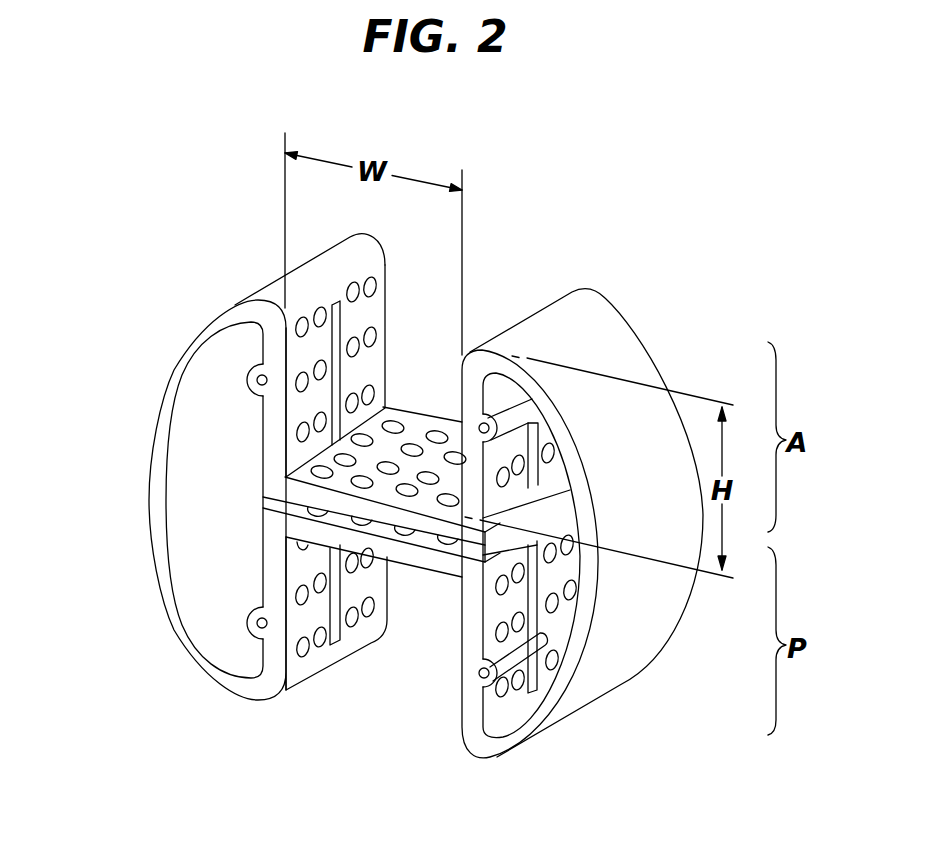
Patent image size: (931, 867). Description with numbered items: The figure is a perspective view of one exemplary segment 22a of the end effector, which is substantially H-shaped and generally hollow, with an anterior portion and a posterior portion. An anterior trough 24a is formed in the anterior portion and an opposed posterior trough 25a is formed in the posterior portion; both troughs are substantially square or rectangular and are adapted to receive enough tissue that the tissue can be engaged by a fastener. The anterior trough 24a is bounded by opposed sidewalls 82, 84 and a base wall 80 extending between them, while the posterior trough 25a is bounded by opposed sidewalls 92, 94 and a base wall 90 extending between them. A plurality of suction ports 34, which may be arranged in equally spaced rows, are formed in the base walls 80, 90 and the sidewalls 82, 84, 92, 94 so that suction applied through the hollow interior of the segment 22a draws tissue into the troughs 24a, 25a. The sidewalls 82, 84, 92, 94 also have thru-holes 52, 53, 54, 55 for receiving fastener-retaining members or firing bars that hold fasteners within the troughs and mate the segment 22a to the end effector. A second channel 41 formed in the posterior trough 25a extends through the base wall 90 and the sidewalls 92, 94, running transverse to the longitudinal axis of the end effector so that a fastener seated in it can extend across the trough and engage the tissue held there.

The segment 22a is at (170, 256).
The anterior trough 24a is at (506, 282).
The posterior trough 25a is at (368, 692).
The sidewall 82 is at (357, 268).
The sidewall 92 is at (292, 670).
The sidewall 84 is at (541, 306).
The sidewall 94 is at (457, 668).
The base wall 80 is at (337, 480).
The base wall 90 is at (413, 575).
The suction port 34 is at (376, 289).
The second channel 41 is at (331, 568).
The thru-hole 52 is at (257, 379).
The thru-hole 53 is at (479, 426).
The thru-hole 54 is at (487, 679).
The thru-hole 55 is at (257, 626).